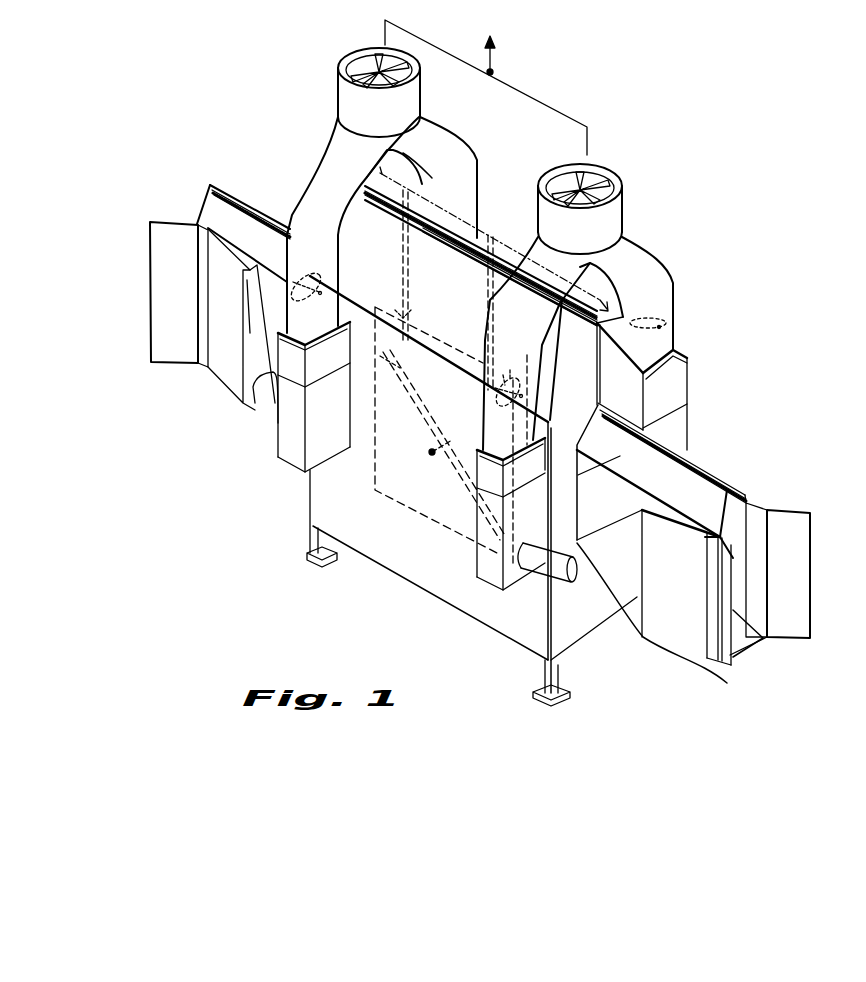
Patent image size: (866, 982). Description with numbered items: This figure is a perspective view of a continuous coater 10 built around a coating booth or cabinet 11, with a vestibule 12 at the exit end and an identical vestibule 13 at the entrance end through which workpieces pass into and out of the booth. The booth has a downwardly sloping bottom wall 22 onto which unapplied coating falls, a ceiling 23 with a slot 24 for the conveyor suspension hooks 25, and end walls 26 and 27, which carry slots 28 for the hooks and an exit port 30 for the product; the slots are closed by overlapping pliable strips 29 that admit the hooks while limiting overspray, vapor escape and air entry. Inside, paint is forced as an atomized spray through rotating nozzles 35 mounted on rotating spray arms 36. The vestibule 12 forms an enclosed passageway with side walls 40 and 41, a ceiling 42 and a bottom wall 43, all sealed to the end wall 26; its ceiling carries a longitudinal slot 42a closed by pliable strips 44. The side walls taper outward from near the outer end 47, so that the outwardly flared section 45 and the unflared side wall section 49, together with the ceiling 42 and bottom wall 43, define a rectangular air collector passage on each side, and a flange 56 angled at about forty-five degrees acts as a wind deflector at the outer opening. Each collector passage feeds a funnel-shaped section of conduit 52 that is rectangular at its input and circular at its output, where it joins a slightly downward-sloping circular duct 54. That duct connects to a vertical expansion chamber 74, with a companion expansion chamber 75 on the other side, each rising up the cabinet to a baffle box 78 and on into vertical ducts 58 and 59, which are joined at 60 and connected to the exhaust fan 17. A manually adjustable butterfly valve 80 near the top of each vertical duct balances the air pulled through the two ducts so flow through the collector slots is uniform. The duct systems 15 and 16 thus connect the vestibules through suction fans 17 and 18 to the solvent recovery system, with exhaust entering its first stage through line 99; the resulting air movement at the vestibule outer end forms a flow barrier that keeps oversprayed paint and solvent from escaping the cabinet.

The coater 10 is at (293, 626).
The coating booth 11 is at (418, 562).
The vestibule 12 is at (722, 462).
The vestibule 13 is at (207, 186).
The duct system 15 is at (680, 250).
The duct system 16 is at (299, 150).
The suction fan 17 is at (592, 196).
The suction fan 18 is at (362, 66).
The bottom wall 22 is at (402, 551).
The ceiling 23 is at (448, 298).
The slot 24 is at (450, 228).
The conveyor suspension hooks 25 is at (450, 173).
The end wall 26 is at (588, 633).
The end wall 27 is at (307, 494).
The slot 28 is at (603, 362).
The overlapping pliable strips 29 is at (583, 327).
The exit port 30 is at (600, 470).
The rotating nozzles 35 is at (410, 373).
The rotating spray arms 36 is at (418, 451).
The side wall 40 is at (604, 523).
The side wall 41 is at (743, 526).
The ceiling 42 is at (663, 481).
The slot 42a is at (722, 442).
The bottom wall 43 is at (750, 647).
The overlapping pliable strips 44 is at (690, 446).
The outwardly flared section 45 is at (679, 614).
The outer end 47 is at (745, 670).
The unflared side wall section 49 is at (608, 501).
The funnel-shaped section of conduit 52 is at (611, 585).
The circular duct 54 is at (547, 574).
The flange 56 is at (800, 614).
The duct 58 is at (528, 323).
The duct 59 is at (673, 288).
The joint 60 is at (598, 262).
The expansion chamber 74 is at (493, 585).
The expansion chamber 75 is at (676, 420).
The baffle box 78 is at (480, 455).
The butterfly valve 80 is at (527, 362).
The line 99 is at (520, 88).